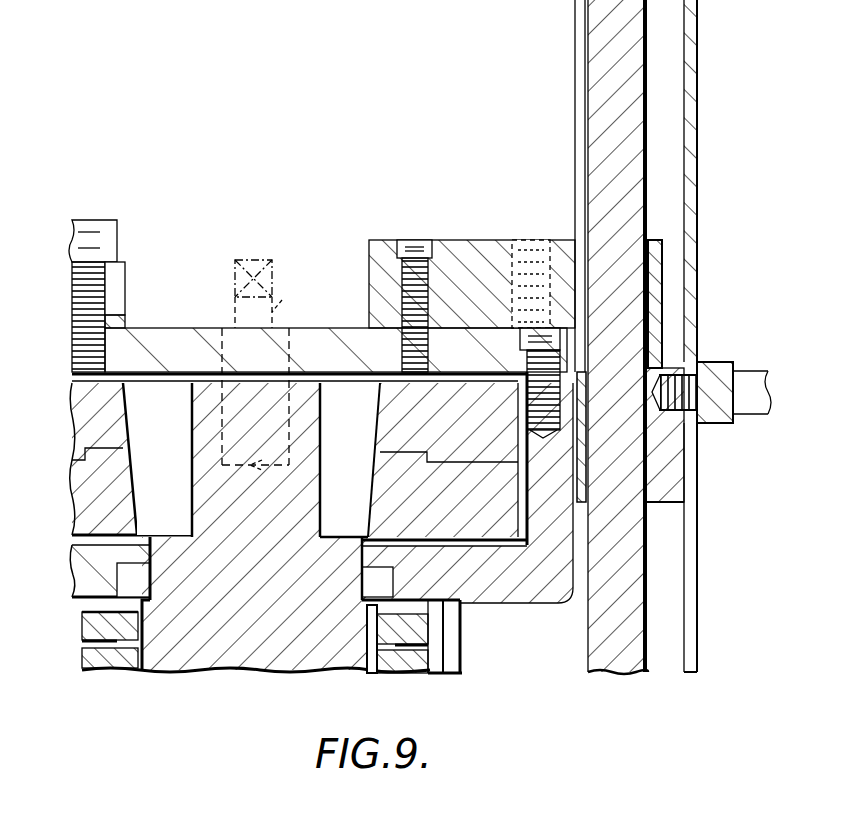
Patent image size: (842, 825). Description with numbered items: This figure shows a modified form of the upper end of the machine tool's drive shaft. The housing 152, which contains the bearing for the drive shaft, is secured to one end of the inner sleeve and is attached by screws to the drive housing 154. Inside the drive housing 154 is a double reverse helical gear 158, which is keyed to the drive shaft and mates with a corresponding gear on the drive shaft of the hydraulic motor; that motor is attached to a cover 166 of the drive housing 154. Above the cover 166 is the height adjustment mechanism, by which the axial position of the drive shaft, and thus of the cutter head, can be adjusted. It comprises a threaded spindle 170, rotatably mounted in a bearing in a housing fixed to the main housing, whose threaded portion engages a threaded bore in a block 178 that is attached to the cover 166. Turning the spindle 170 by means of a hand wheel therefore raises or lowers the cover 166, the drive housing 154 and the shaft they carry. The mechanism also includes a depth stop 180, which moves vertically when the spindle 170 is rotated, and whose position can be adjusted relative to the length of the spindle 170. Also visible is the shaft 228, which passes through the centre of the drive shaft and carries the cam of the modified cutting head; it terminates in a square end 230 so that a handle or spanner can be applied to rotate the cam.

The housing 152 is at (452, 676).
The drive housing 154 is at (512, 580).
The double reverse helical gear 158 is at (80, 430).
The cover 166 is at (194, 345).
The threaded spindle 170 is at (632, 106).
The block 178 is at (470, 258).
The depth stop 180 is at (690, 456).
The shaft 228 is at (282, 306).
The square end 230 is at (262, 258).